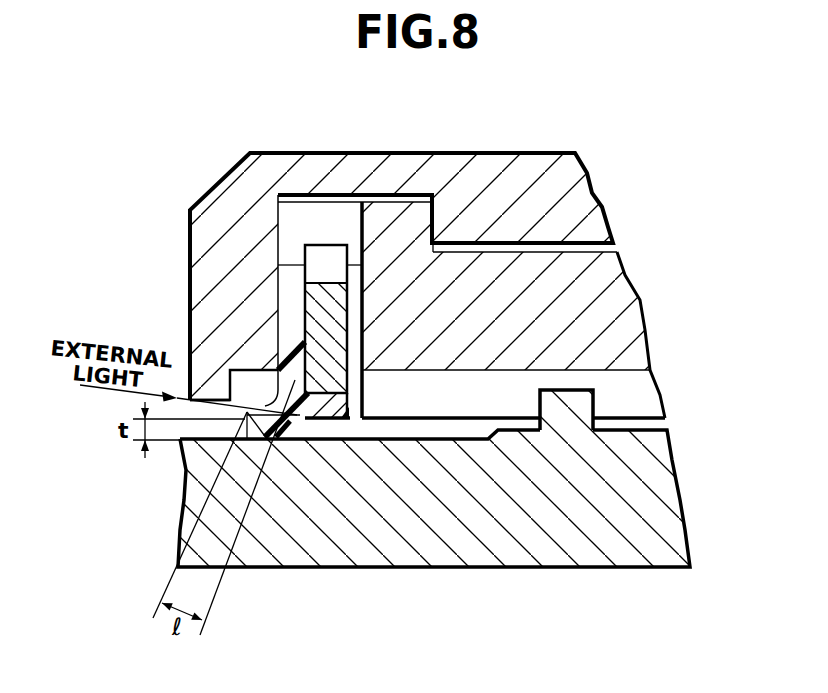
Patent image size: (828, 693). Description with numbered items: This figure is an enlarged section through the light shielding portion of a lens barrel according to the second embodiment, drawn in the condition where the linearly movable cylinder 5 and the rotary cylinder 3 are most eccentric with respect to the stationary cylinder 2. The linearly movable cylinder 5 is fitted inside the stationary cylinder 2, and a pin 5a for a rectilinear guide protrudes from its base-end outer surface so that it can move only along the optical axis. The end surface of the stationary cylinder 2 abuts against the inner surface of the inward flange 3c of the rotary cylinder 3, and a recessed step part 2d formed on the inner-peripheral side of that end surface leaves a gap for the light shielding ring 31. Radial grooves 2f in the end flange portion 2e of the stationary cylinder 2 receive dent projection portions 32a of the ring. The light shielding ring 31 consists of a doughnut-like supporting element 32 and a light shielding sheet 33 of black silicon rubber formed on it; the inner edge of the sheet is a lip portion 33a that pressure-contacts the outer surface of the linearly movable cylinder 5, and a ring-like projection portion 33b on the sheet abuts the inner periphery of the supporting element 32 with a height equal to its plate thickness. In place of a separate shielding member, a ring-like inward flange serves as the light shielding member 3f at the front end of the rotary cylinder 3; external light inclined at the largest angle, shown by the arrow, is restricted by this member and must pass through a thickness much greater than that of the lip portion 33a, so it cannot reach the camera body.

The stationary cylinder 2 is at (625, 343).
The recessed step part 2d is at (363, 337).
The end flange portion 2e is at (348, 200).
The radial groove 2f is at (318, 227).
The rotary cylinder 3 is at (575, 196).
The inward flange 3c is at (203, 267).
The light shielding member 3f is at (200, 390).
The linearly movable cylinder 5 is at (650, 496).
The pin 5a is at (565, 412).
The light shielding ring 31 is at (322, 262).
The supporting element 32 is at (332, 312).
The dent projection portion 32a is at (297, 287).
The light shielding sheet 33 is at (300, 340).
The lip portion 33a is at (265, 440).
The projection portion 33b is at (336, 410).